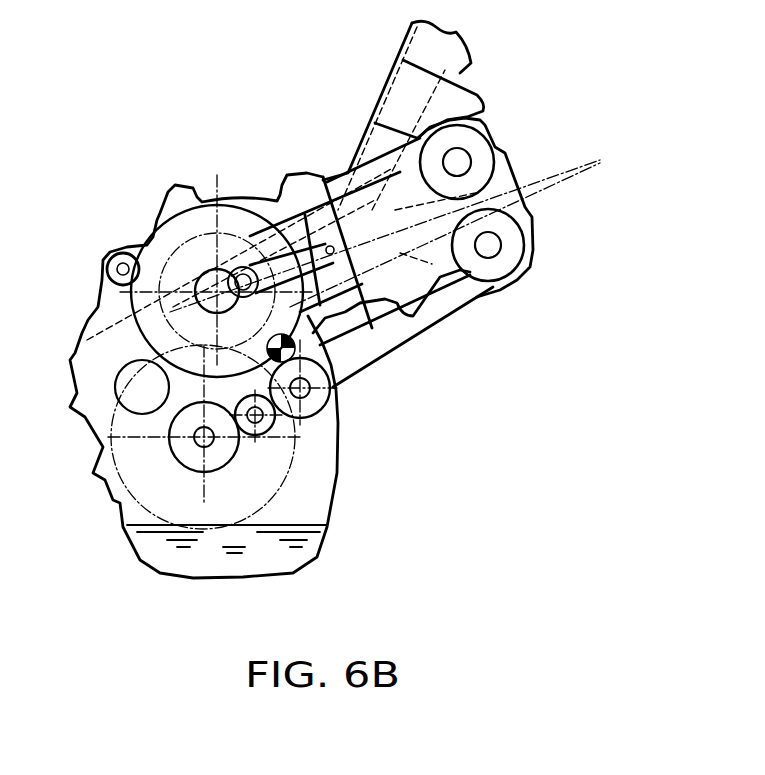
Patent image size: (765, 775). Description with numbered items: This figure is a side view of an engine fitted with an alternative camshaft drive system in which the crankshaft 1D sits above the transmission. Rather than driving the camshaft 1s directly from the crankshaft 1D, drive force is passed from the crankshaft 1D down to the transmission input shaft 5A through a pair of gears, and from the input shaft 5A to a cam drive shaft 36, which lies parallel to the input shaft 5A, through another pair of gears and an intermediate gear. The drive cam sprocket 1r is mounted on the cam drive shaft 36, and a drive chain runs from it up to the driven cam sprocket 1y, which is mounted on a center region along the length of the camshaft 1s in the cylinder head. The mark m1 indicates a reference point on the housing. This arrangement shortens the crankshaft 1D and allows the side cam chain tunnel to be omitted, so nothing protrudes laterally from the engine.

The crankshaft 1D is at (205, 278).
The camshaft 1s is at (490, 245).
The driven cam sprocket 1y is at (503, 267).
The drive cam sprocket 1r is at (322, 397).
The cam drive shaft 36 is at (318, 405).
The motor m1 is at (305, 398).
The input shaft 5A is at (210, 443).